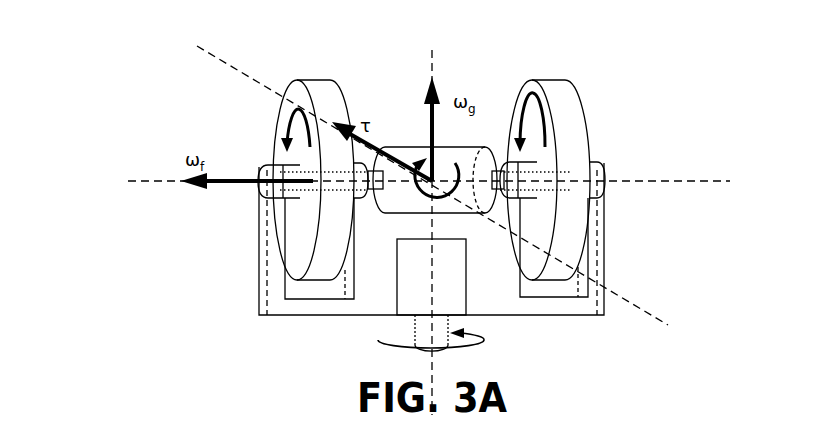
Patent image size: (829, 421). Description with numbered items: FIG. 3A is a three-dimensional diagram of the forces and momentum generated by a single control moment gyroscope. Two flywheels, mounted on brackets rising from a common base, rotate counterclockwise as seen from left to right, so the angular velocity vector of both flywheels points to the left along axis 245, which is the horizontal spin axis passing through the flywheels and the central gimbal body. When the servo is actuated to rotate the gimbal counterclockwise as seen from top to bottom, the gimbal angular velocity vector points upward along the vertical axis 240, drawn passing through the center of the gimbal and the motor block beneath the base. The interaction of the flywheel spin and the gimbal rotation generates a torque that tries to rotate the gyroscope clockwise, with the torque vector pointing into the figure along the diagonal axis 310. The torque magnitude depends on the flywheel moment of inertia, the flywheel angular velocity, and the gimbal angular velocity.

The gimbal axis 240 is at (432, 40).
The flywheel spin axis 245 is at (100, 181).
The torque axis 310 is at (681, 326).